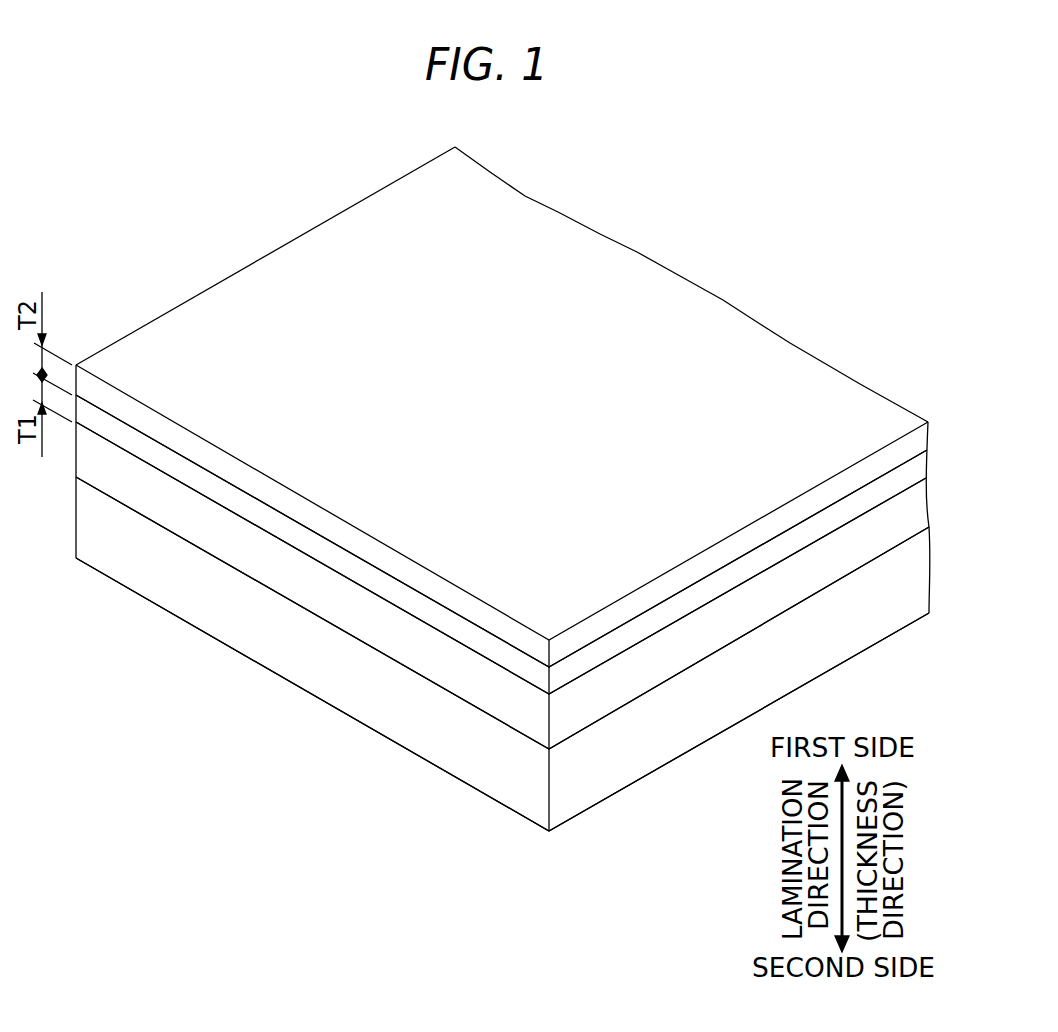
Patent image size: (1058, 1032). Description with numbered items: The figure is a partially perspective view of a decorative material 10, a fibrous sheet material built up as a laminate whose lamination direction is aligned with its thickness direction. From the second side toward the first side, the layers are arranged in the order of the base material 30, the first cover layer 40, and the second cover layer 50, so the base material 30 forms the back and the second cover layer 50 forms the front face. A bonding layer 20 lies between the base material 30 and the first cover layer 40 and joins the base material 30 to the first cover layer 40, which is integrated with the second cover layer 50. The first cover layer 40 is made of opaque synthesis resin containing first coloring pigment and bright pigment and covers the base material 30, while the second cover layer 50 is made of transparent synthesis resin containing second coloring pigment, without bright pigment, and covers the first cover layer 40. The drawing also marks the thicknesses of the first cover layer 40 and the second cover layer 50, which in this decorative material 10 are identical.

The decorative material 10 is at (503, 489).
The second cover layer 50 is at (237, 472).
The first cover layer 40 is at (267, 517).
The bonding layer 20 is at (303, 576).
The base material 30 is at (337, 668).